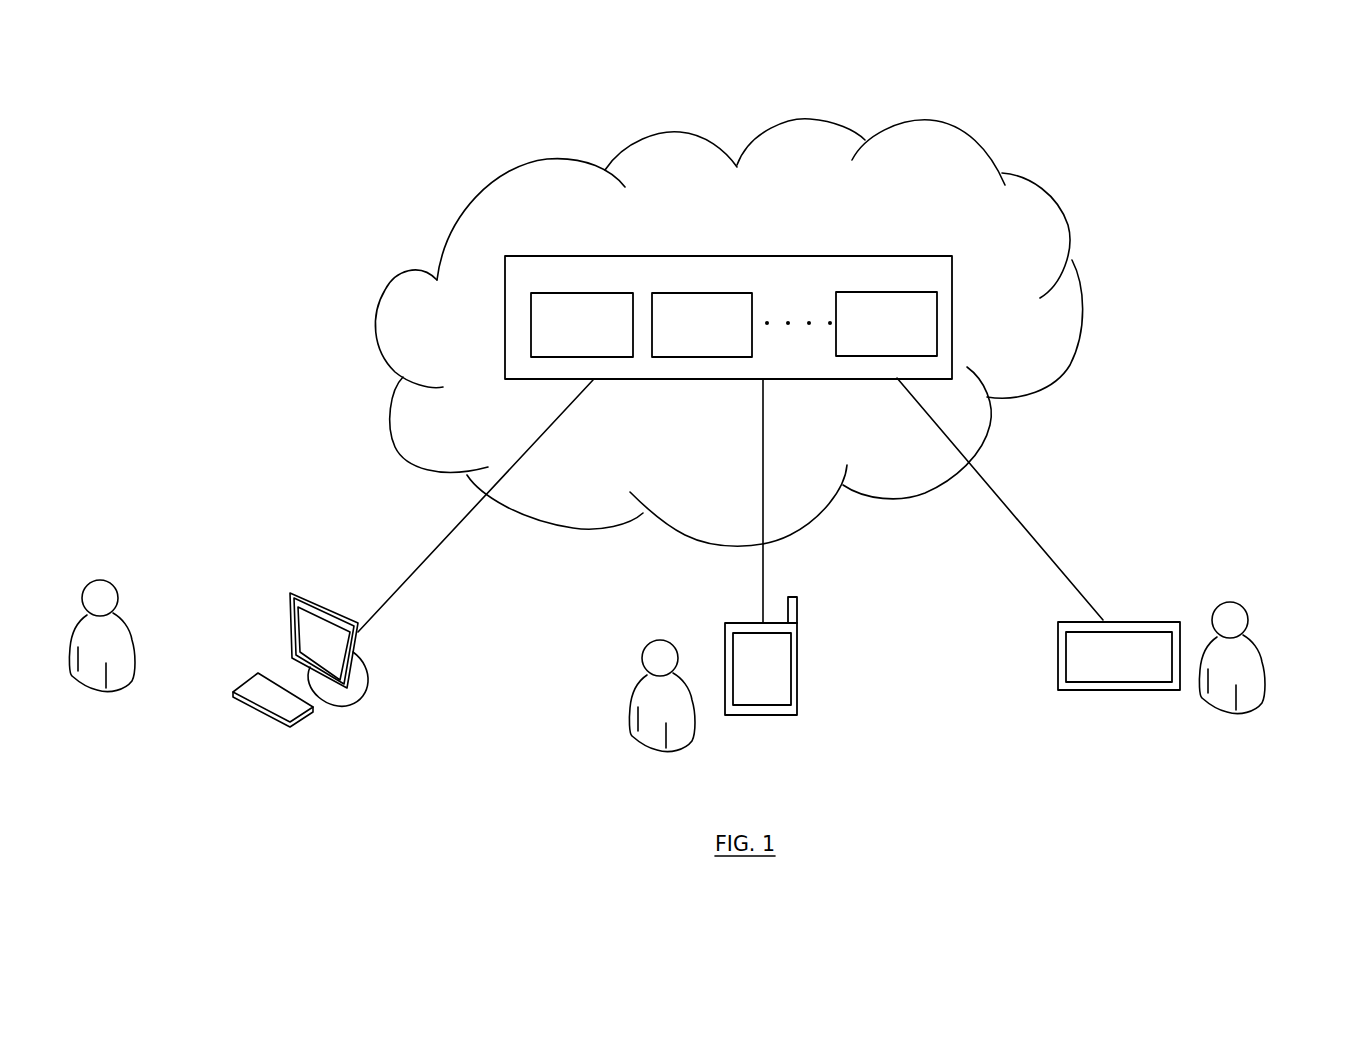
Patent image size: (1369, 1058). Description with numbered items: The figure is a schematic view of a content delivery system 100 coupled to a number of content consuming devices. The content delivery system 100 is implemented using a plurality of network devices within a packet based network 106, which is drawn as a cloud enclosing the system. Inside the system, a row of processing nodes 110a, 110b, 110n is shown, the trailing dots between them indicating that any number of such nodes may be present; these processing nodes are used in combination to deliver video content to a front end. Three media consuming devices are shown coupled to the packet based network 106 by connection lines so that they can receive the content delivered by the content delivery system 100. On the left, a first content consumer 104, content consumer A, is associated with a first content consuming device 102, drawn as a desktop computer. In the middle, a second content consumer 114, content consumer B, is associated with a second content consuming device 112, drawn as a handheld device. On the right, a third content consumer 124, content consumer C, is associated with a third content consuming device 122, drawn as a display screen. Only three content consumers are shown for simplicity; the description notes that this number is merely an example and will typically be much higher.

The content delivery system 100 is at (813, 255).
The first content consuming device 102 is at (290, 622).
The first content consumer 104 is at (115, 607).
The packet based network 106 is at (988, 138).
The processing node 110a is at (587, 293).
The processing node 110b is at (700, 357).
The processing node 110n is at (887, 292).
The second content consuming device 112 is at (803, 665).
The second content consumer 114 is at (630, 695).
The third content consuming device 122 is at (1258, 662).
The third content consumer 124 is at (1057, 673).